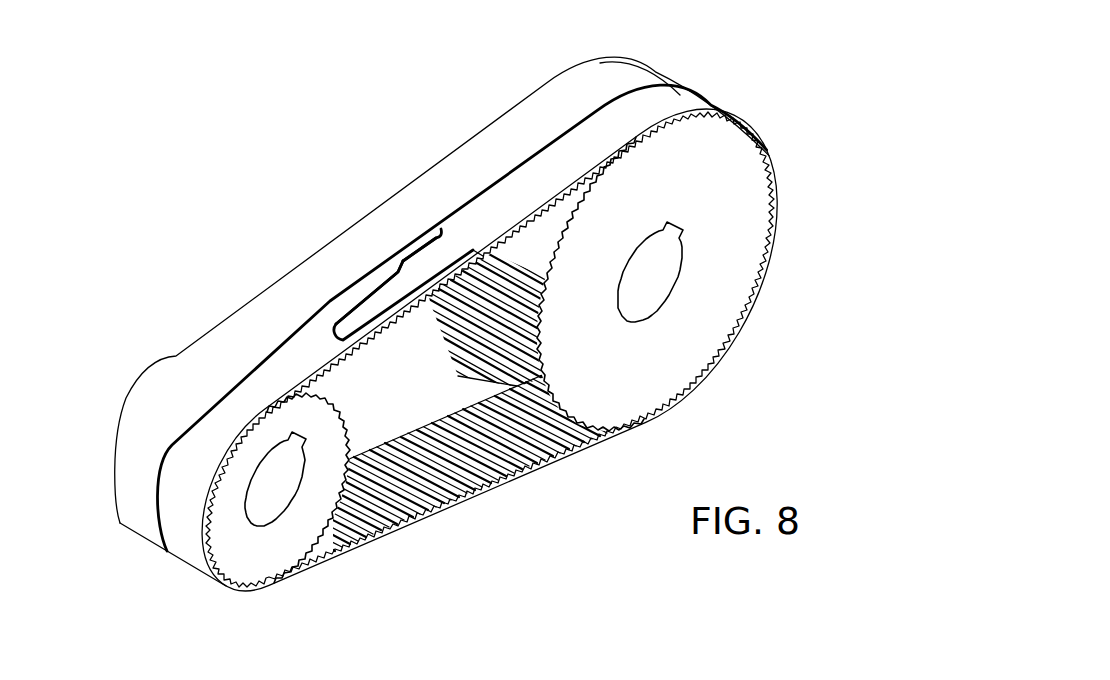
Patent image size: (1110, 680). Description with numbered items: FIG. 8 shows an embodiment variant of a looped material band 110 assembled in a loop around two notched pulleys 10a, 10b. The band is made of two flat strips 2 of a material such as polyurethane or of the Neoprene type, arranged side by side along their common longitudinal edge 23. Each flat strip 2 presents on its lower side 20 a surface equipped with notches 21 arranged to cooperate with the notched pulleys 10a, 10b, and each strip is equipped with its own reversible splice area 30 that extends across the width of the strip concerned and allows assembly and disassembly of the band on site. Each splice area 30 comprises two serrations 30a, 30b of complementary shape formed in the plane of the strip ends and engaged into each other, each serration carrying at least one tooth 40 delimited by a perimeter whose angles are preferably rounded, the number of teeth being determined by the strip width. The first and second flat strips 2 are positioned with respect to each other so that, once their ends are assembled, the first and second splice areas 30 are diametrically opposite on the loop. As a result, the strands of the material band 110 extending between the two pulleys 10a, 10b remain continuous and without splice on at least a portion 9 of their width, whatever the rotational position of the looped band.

The flat strip 2 is at (213, 428).
The portion of width 9 is at (410, 195).
The notched pulley 10a is at (243, 552).
The notched pulley 10b is at (722, 270).
The lower side 20 is at (421, 497).
The notches 21 is at (516, 468).
The longitudinal edge 23 is at (546, 75).
The splice area 30 is at (366, 262).
The serration 30a is at (320, 347).
The serration 30b is at (460, 228).
The tooth 40 is at (400, 292).
The looped material band 110 is at (277, 246).